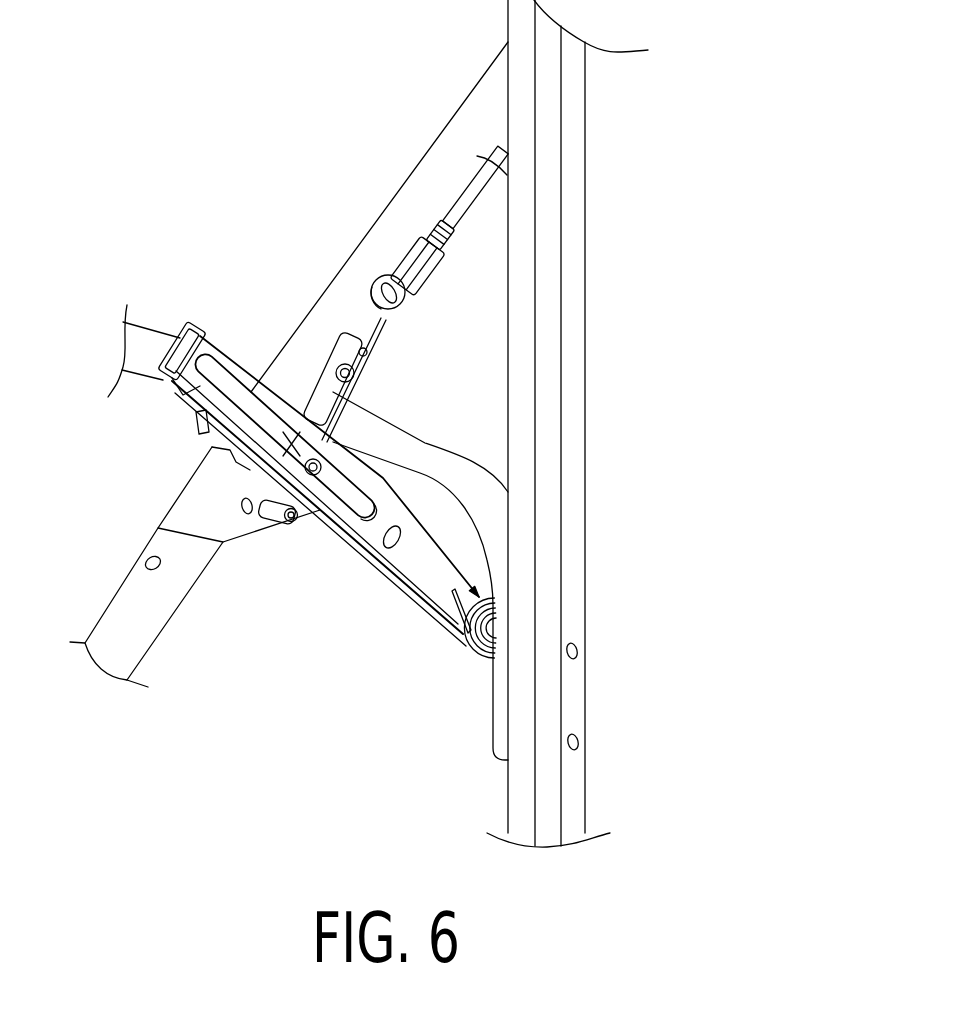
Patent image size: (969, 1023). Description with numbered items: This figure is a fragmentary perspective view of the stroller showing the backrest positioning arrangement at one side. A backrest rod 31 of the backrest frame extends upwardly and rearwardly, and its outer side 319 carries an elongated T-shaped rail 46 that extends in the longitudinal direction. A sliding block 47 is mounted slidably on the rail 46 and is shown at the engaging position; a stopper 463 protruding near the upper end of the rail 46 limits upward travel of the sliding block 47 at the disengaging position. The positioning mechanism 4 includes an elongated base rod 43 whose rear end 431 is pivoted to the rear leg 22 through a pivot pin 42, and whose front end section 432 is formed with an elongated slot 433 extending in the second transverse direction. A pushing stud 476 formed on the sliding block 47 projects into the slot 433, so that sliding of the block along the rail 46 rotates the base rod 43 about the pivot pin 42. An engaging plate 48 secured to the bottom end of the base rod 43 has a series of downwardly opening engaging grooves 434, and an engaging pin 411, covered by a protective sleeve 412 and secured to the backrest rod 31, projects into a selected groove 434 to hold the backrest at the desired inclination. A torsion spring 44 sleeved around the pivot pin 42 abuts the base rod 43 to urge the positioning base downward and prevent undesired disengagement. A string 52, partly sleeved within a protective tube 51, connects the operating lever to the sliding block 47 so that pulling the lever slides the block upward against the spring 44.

The positioning mechanism 4 is at (249, 349).
The rear leg 22 is at (577, 795).
The backrest rod 31 is at (142, 638).
The pivot pin 42 is at (580, 650).
The base rod 43 is at (200, 337).
The torsion spring 44 is at (472, 642).
The T-shaped rail 46 is at (333, 392).
The sliding block 47 is at (285, 395).
The engaging plate 48 is at (317, 530).
The protective tube 51 is at (453, 213).
The string 52 is at (380, 338).
The outer side 319 is at (327, 352).
The engaging pin 411 is at (298, 528).
The protective sleeve 412 is at (272, 515).
The rear end 431 is at (492, 577).
The front end section 432 is at (183, 395).
The elongated slot 433 is at (340, 495).
The engaging groove 434 is at (247, 517).
The stopper 463 is at (366, 346).
The pushing stud 476 is at (333, 440).